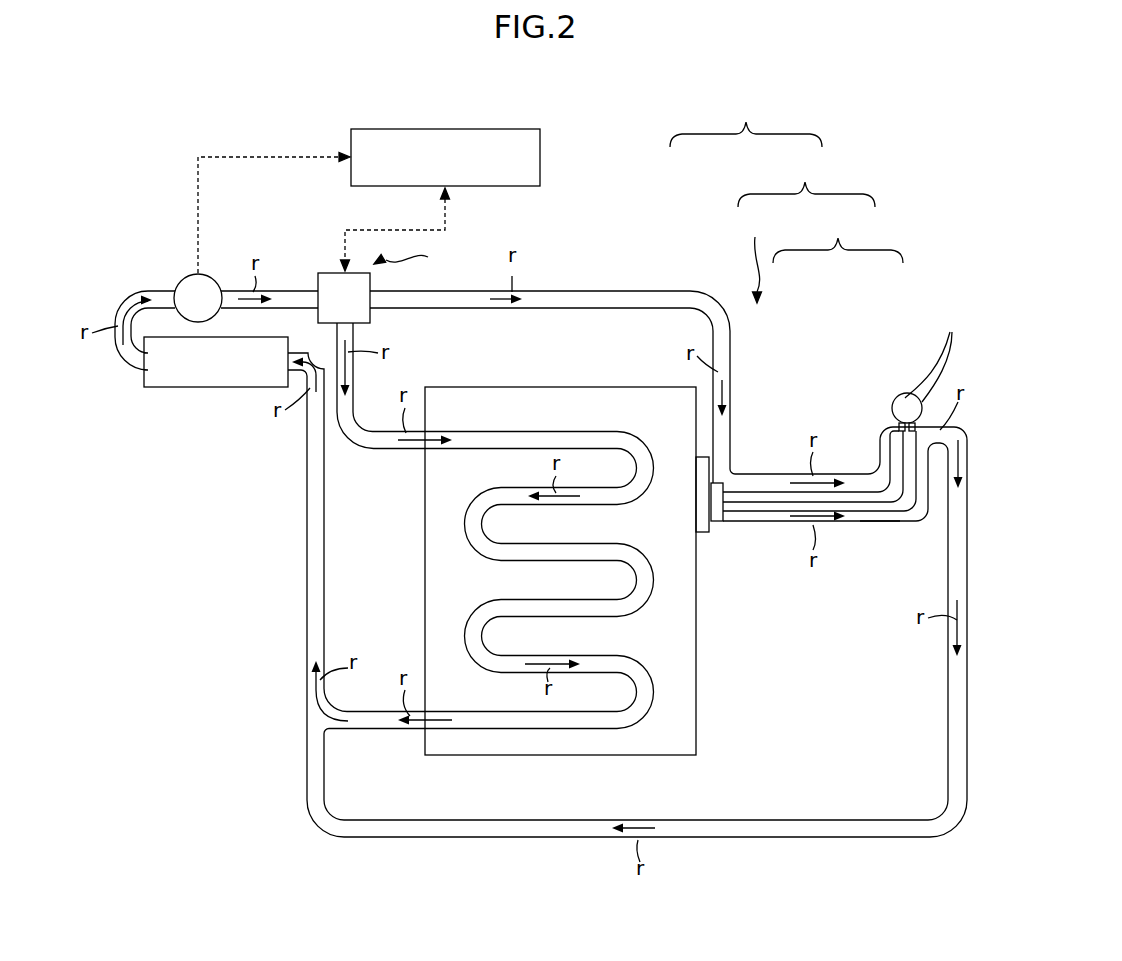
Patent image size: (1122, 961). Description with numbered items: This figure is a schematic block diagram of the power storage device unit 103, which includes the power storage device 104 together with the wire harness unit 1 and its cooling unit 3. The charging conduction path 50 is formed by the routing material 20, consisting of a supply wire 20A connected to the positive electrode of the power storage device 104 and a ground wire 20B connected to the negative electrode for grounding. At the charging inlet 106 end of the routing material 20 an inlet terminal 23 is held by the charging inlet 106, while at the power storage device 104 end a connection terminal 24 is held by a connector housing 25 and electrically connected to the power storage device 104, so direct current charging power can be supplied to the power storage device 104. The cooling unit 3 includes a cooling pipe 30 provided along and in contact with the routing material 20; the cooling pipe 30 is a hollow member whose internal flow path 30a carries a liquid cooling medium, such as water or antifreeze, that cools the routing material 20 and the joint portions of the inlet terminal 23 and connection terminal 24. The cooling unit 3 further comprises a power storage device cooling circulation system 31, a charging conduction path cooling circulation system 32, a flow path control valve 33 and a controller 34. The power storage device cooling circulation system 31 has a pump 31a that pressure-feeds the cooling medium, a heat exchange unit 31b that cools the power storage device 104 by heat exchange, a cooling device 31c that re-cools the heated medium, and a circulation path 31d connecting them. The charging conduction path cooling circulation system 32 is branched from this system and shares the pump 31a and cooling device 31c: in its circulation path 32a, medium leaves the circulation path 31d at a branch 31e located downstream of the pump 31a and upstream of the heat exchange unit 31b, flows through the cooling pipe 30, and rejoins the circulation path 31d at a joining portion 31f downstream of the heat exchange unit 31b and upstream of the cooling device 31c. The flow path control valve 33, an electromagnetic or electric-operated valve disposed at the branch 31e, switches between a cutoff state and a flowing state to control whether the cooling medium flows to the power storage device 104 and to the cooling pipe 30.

The wire harness unit 1 is at (806, 179).
The cooling unit 3 is at (755, 257).
The routing material 20 is at (838, 237).
The supply wire 20A is at (852, 495).
The ground wire 20B is at (872, 505).
The inlet terminal 23 is at (935, 352).
The connection terminal 24 is at (730, 498).
The connector housing 25 is at (716, 545).
The cooling pipe 30 is at (782, 474).
The flow path 30a is at (872, 518).
The power storage device cooling circulation system 31 is at (283, 517).
The pump 31a is at (205, 273).
The heat exchange unit 31b is at (512, 412).
The cooling device 31c is at (214, 388).
The circulation path 31d is at (380, 398).
The branch 31e is at (420, 255).
The joining portion 31f is at (284, 703).
The charging conduction path cooling circulation system 32 is at (760, 432).
The circulation path 32a is at (828, 799).
The flow path control valve 33 is at (328, 272).
The controller 34 is at (442, 128).
The charging conduction path 50 is at (838, 556).
The power storage device unit 103 is at (746, 120).
The power storage device 104 is at (613, 366).
The charging inlet 106 is at (905, 382).